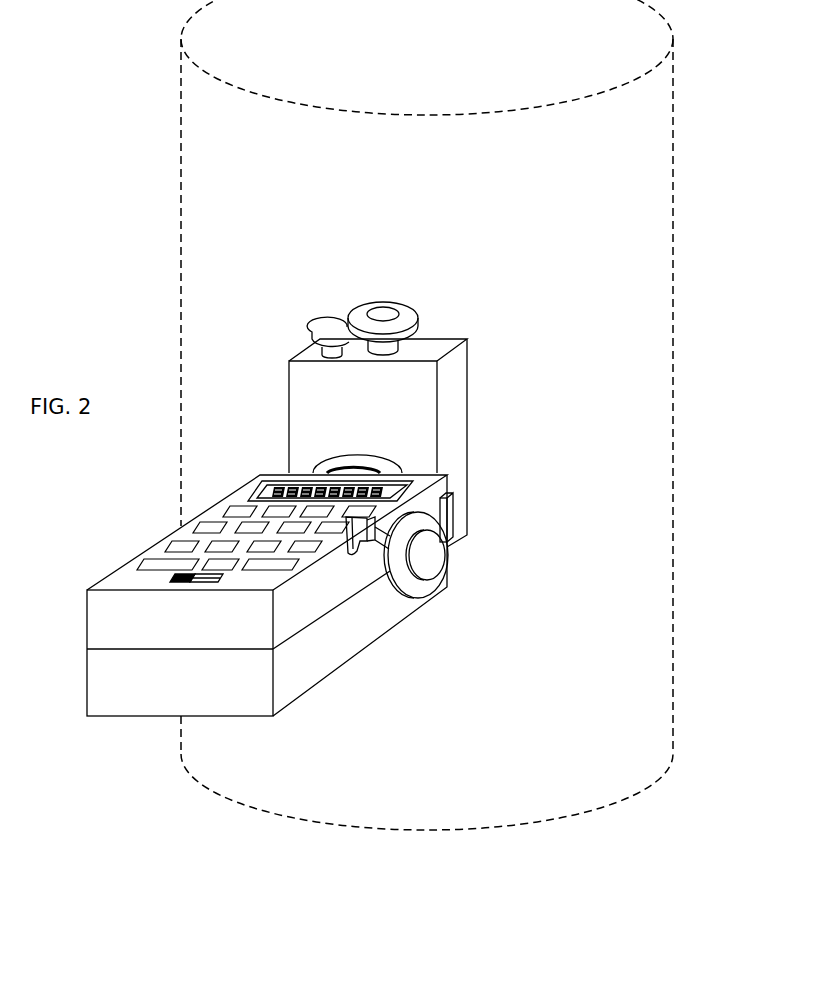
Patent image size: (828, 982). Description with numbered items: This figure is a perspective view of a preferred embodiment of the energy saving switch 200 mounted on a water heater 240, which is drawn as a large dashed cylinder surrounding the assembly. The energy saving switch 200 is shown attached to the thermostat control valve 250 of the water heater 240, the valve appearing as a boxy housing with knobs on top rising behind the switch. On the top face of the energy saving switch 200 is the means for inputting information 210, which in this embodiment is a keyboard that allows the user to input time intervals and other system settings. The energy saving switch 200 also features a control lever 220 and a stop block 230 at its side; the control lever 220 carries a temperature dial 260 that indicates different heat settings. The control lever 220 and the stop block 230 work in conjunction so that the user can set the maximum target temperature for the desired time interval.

The energy saving switch 200 is at (123, 545).
The means for inputting information 210 is at (262, 483).
The control lever 220 is at (382, 570).
The stop block 230 is at (453, 493).
The water heater 240 is at (645, 375).
The thermostat control valve 250 is at (455, 444).
The temperature dial 260 is at (432, 585).